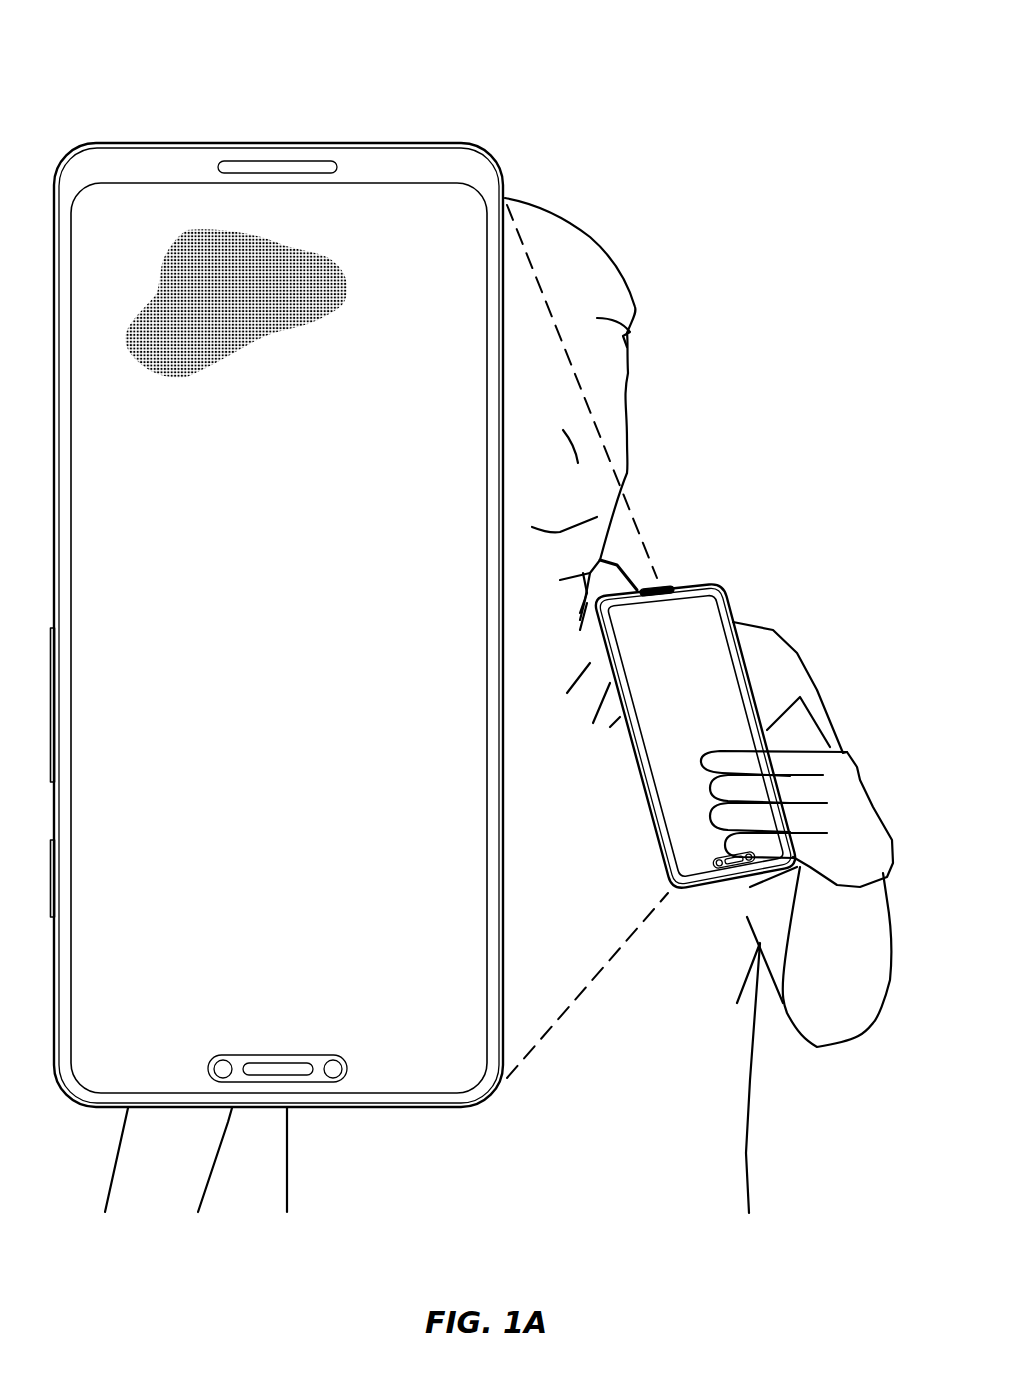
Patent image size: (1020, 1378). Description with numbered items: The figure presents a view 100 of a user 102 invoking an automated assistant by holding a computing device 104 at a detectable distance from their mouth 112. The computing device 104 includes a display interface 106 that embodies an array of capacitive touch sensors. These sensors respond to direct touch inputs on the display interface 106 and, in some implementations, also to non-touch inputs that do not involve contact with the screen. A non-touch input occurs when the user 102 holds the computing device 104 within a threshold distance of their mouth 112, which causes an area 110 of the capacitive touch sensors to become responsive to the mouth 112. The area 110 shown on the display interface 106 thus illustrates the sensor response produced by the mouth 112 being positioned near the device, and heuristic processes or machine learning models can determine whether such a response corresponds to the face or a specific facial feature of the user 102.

The view 100 is at (146, 88).
The user 102 is at (604, 852).
The computing device 104 is at (405, 142).
The display interface 106 is at (263, 816).
The area 110 is at (268, 358).
The mouth 112 is at (551, 535).